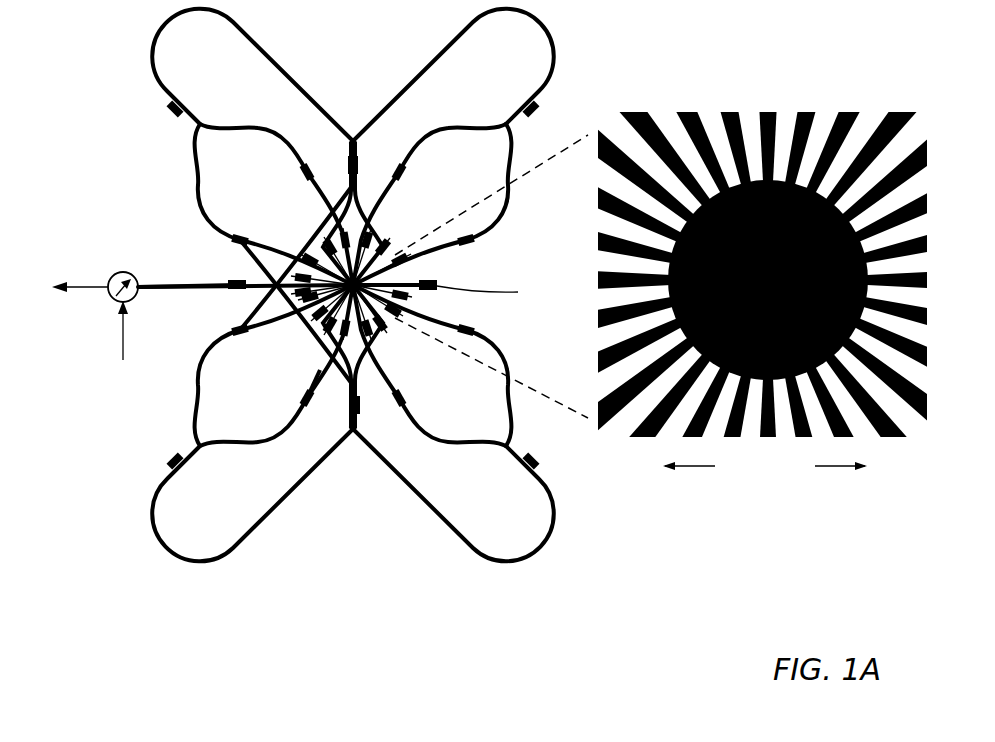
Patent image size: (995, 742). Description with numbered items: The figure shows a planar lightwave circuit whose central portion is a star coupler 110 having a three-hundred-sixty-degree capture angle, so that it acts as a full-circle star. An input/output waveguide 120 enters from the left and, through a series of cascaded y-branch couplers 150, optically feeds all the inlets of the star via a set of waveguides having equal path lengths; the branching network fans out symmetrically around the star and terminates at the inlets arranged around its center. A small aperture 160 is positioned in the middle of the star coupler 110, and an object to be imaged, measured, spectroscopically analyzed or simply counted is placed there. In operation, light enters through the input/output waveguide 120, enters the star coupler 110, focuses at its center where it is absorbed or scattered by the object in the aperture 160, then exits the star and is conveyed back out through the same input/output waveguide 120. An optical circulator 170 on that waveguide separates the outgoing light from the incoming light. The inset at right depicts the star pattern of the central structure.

The star coupler 110 is at (806, 112).
The input/output waveguide 120 is at (180, 292).
The y-branch coupler 150 is at (240, 343).
The aperture 160 is at (487, 292).
The optical circulator 170 is at (118, 272).